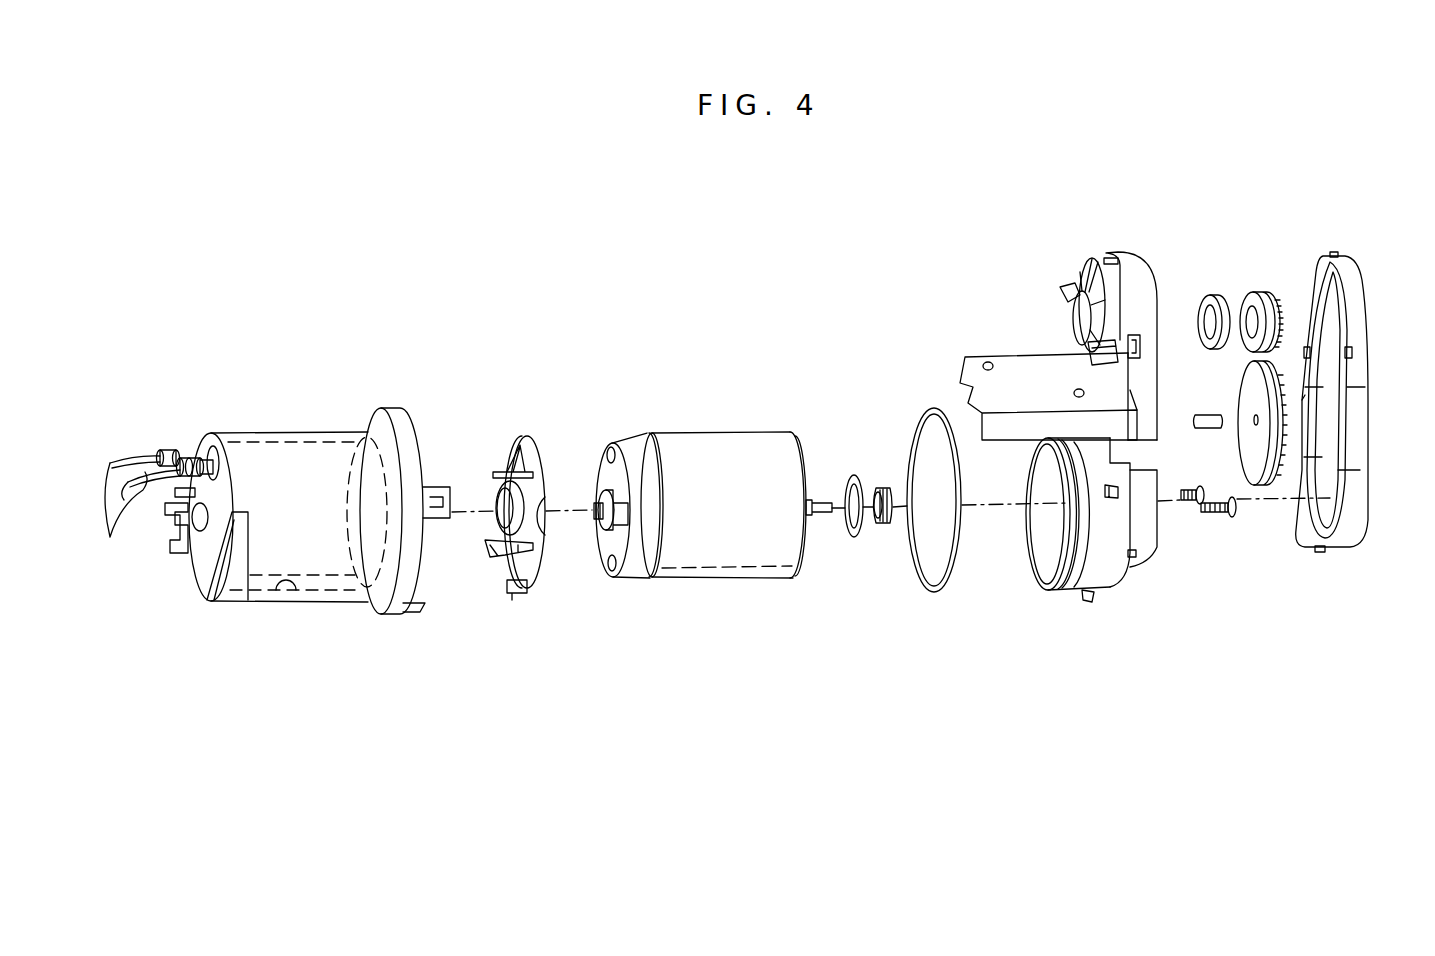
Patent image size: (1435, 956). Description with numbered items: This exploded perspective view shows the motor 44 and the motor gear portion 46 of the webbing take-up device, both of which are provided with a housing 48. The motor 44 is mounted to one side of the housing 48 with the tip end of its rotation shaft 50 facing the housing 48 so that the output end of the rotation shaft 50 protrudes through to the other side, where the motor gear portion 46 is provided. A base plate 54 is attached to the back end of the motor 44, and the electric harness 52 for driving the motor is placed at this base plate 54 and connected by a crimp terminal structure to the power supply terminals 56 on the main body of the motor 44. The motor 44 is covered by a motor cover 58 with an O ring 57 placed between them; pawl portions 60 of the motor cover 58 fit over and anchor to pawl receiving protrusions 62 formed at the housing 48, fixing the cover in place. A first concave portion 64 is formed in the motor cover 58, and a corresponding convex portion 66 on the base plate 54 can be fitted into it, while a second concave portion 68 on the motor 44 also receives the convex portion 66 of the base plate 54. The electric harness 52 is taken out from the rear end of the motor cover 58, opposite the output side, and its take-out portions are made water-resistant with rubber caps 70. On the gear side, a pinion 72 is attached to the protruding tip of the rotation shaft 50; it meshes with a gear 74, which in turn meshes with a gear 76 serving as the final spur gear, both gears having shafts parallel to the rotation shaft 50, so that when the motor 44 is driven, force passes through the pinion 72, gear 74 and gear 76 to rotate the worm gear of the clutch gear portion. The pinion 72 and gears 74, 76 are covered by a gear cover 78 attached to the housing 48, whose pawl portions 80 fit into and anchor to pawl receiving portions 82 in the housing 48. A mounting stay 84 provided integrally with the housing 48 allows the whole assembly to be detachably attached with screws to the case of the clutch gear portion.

The motor 44 is at (710, 432).
The motor gear portion 46 is at (1210, 230).
The housing 48 is at (1118, 589).
The rotation shaft 50 is at (822, 515).
The electric harness 52 is at (118, 493).
The base plate 54 is at (526, 438).
The power supply terminals 56 is at (600, 525).
The O ring 57 is at (935, 593).
The motor cover 58 is at (276, 432).
The pawl portions 60 is at (438, 487).
The pawl receiving protrusions 62 is at (1112, 498).
The first concave portion 64 is at (290, 598).
The convex portion 66 is at (517, 596).
The second concave portion 68 is at (612, 580).
The rubber caps 70 is at (186, 457).
The pinion 72 is at (882, 487).
The gear 74 is at (1262, 488).
The gear 76 is at (1258, 290).
The gear cover 78 is at (1370, 412).
The pawl portions 80 is at (1334, 252).
The pawl receiving portions 82 is at (1112, 254).
The mounting stay 84 is at (1032, 375).